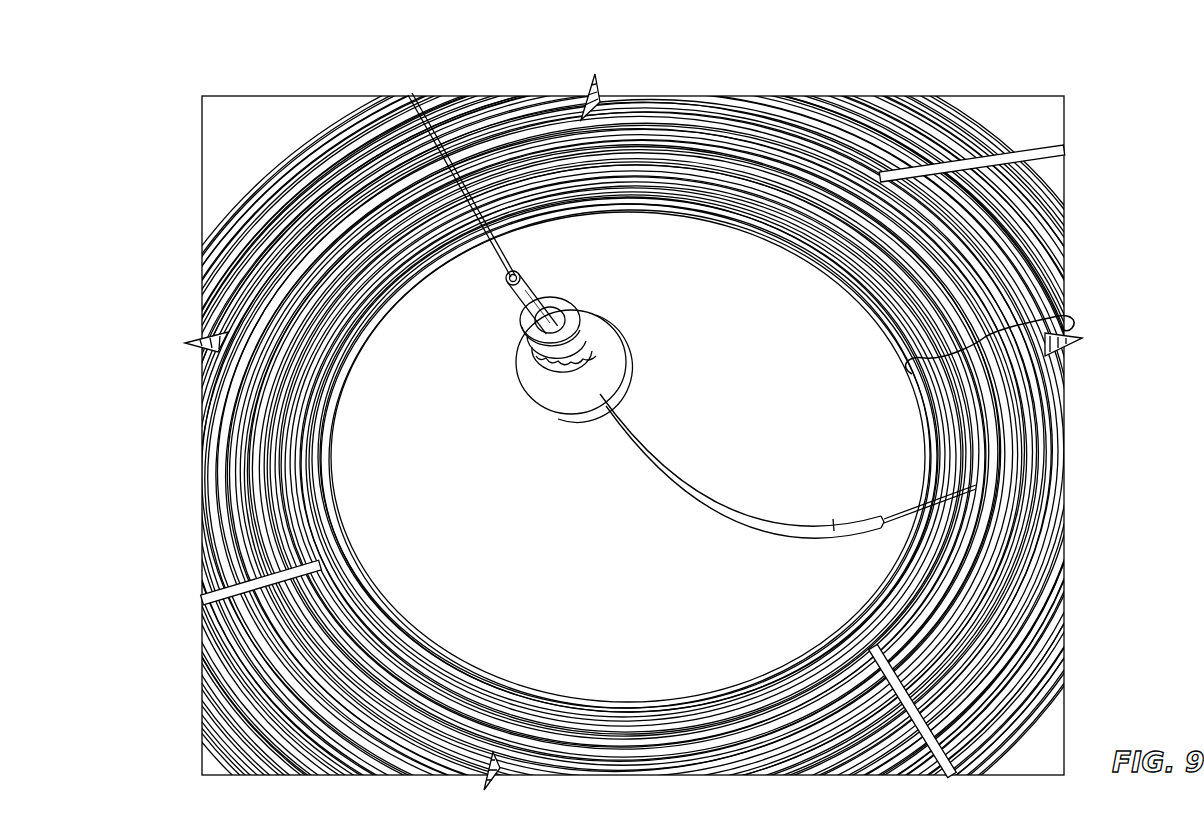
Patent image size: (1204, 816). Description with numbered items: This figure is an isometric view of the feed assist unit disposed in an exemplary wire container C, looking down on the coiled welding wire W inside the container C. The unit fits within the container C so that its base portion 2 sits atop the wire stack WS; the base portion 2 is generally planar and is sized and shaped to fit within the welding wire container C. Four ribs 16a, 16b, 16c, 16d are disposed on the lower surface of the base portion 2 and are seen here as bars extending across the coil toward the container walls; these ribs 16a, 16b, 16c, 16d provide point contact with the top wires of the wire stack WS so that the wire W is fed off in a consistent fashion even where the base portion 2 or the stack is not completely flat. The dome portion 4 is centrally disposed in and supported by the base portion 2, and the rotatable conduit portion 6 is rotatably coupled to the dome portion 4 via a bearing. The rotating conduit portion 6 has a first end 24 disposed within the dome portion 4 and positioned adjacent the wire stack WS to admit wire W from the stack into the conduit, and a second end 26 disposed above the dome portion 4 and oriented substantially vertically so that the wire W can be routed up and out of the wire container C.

The base portion 2 is at (1053, 687).
The dome portion 4 is at (715, 238).
The rotatable conduit portion 6 is at (678, 480).
The first end 24 is at (883, 518).
The second end 26 is at (521, 272).
The rib 16a is at (403, 110).
The rib 16b is at (948, 172).
The rib 16c is at (905, 650).
The rib 16d is at (295, 577).
The wire w is at (462, 147).
The wire stack ws is at (985, 337).
The container C is at (1048, 760).